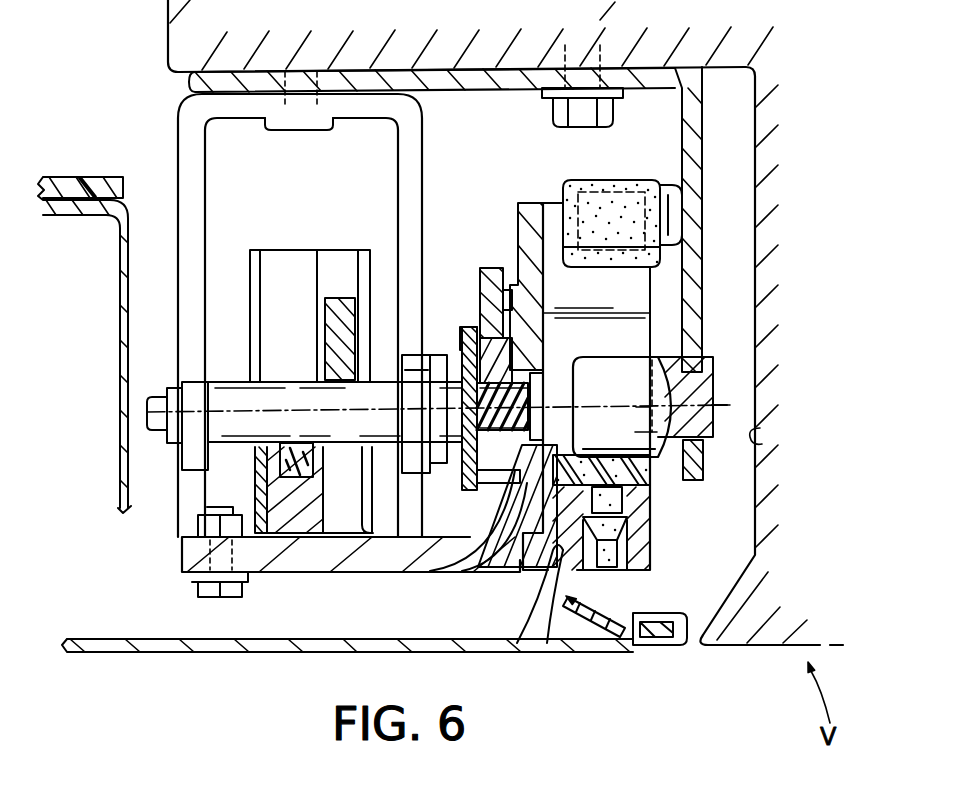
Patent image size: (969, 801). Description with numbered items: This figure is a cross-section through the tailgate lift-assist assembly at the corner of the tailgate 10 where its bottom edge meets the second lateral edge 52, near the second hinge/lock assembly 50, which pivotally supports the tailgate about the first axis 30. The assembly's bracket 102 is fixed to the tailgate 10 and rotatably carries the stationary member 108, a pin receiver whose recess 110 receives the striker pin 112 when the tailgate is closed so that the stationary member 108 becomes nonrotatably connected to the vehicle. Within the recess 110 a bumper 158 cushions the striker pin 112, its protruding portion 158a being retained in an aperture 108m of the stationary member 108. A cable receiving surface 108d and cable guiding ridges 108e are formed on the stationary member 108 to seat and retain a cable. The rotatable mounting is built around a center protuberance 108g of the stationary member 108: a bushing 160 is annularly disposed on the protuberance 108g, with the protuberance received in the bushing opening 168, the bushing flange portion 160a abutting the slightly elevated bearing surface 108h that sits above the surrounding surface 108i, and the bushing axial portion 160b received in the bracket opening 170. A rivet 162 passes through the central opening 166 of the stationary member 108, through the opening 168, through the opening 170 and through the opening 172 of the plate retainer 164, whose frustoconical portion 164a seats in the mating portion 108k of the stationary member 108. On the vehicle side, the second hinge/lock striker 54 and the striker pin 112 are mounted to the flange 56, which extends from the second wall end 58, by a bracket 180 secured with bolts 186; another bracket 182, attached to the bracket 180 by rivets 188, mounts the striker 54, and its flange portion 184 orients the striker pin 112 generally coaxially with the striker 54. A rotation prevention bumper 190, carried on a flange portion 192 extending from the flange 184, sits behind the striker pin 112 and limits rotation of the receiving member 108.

The tailgate 10 is at (108, 654).
The first axis 30 is at (248, 410).
The second hinge/lock assembly 50 is at (278, 246).
The second lateral edge 52 is at (687, 637).
The second hinge/lock striker 54 is at (237, 433).
The flange 56 is at (490, 70).
The second wall end 58 is at (766, 427).
The bracket 102 is at (338, 569).
The stationary member 108 is at (514, 212).
The cable receiving surface 108d is at (551, 641).
The cable guiding ridges 108e is at (520, 640).
The center protuberance 108g is at (477, 383).
The bearing surface 108h is at (503, 330).
The surface 108i is at (517, 243).
The mating portion 108k is at (466, 445).
The aperture 108m is at (620, 638).
The recess 110 is at (550, 207).
The striker pin 112 is at (647, 350).
The bumper 158 is at (641, 476).
The protruding portion 158a is at (620, 532).
The bushing 160 is at (513, 536).
The flange portion 160a is at (547, 305).
The axial portion 160b is at (460, 530).
The rivet 162 is at (520, 407).
The plate retainer 164 is at (462, 483).
The frustoconical portion 164a is at (470, 377).
The central opening 166 is at (517, 400).
The opening 168 is at (502, 368).
The opening 170 is at (512, 467).
The opening 172 is at (487, 418).
The bracket 180 is at (194, 88).
The bracket 182 is at (188, 152).
The flange portion 184 is at (655, 278).
The bolts 186 is at (557, 113).
The rivets 188 is at (303, 131).
The rotation prevention bumper 190 is at (640, 170).
The flange portion 192 is at (667, 217).